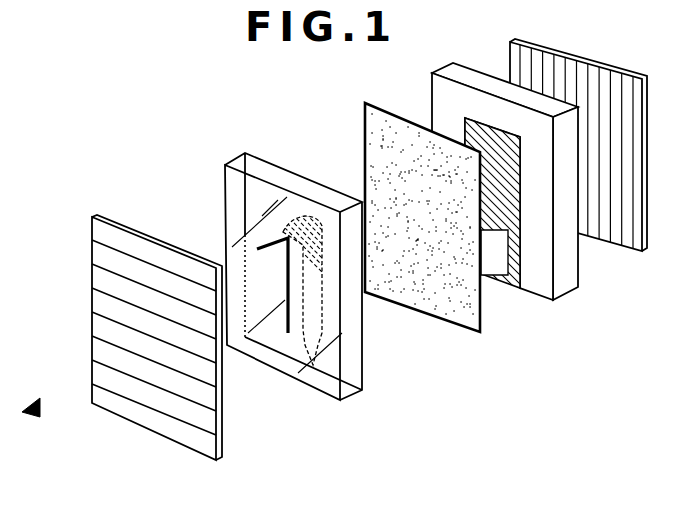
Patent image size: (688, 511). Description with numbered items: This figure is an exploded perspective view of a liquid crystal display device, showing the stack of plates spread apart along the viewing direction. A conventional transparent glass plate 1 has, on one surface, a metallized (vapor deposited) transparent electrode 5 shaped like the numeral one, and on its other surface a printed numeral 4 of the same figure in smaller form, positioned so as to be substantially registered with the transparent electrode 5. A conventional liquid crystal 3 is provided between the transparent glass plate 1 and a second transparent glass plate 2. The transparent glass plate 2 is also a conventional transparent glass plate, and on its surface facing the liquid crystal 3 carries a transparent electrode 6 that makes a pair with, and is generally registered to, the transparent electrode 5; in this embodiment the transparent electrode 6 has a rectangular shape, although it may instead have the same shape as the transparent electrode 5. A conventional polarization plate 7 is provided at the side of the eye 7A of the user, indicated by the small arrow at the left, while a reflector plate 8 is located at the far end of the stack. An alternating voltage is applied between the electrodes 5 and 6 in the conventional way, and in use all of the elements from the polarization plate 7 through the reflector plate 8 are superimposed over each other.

The transparent glass plate 1 is at (333, 290).
The transparent glass plate 2 is at (565, 272).
The liquid crystal 3 is at (434, 300).
The printed numeral 4 is at (284, 326).
The transparent electrode 5 is at (305, 215).
The transparent electrode 6 is at (497, 218).
The polarization plate 7 is at (186, 433).
The eye 7A is at (38, 398).
The reflector plate 8 is at (633, 236).